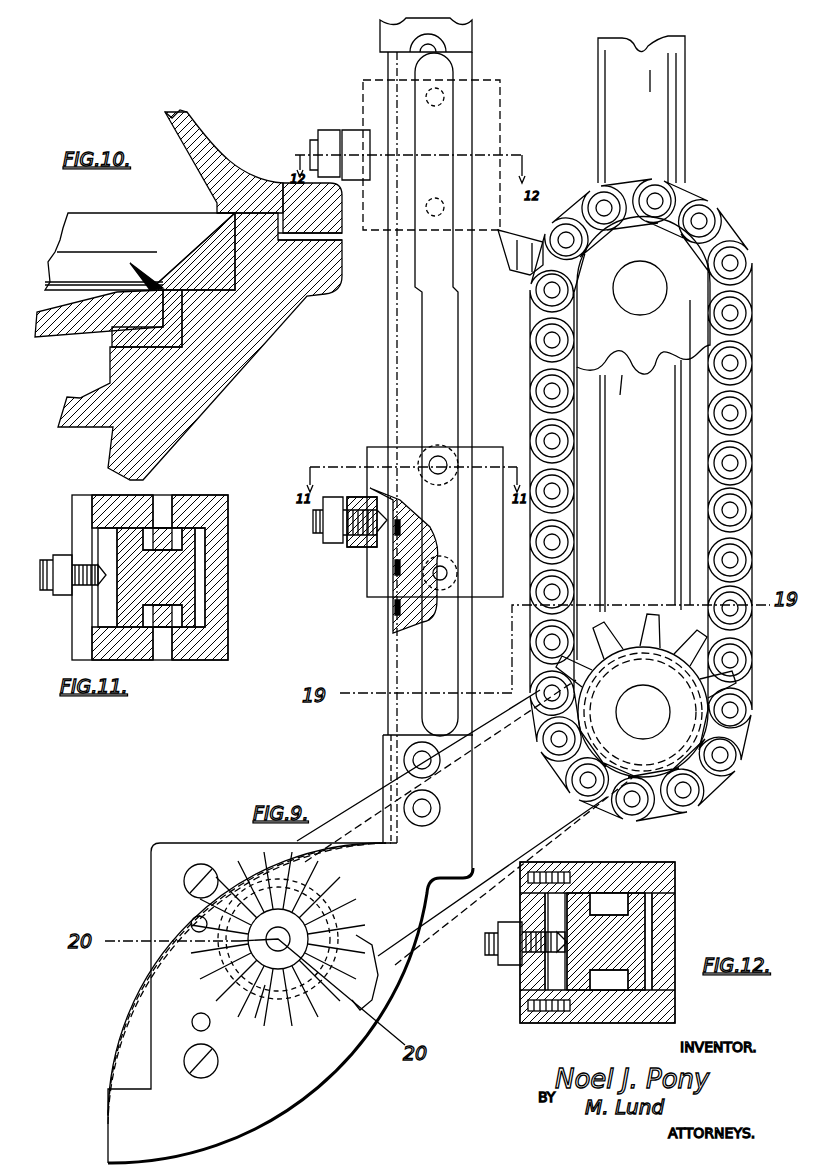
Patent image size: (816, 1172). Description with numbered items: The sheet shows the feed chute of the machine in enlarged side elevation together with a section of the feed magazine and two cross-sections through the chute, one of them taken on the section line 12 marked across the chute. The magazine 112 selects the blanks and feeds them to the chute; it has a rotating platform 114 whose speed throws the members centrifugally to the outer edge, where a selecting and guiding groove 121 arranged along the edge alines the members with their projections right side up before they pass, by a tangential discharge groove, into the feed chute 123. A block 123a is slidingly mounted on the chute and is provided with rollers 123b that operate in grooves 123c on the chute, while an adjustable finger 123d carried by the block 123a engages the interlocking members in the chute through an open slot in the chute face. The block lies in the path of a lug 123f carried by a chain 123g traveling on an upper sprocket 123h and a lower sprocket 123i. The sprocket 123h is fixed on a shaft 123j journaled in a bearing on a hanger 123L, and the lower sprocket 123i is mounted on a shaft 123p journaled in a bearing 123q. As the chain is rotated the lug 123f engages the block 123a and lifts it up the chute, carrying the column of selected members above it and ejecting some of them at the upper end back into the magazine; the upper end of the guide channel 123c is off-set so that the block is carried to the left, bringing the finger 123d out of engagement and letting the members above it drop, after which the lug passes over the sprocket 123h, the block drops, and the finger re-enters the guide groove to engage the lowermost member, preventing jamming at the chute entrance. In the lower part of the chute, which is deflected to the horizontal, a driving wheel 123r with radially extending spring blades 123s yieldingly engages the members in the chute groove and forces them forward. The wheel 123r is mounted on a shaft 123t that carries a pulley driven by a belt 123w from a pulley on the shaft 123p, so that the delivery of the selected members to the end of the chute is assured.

In FIG. 10, the section line 12 is at (310, 205).
In FIG. 10, the magazine 112 is at (180, 165).
In FIG. 10, the rotating platform 114 is at (97, 300).
In FIG. 10, the selecting and guiding groove 121 is at (133, 273).
In FIG. 11, the feed chute 123 is at (110, 580).
In FIG. 12, the feed chute 123 is at (545, 955).
In FIG. 9, the feed chute 123 is at (386, 350).
In FIG. 11, the block 123a is at (225, 645).
In FIG. 12, the block 123a is at (573, 1018).
In FIG. 9, the block 123a is at (380, 453).
In FIG. 11, the rollers 123b is at (185, 535).
In FIG. 11, the grooves 123c is at (200, 545).
In FIG. 12, the grooves 123c is at (607, 905).
In FIG. 9, the grooves 123c is at (425, 640).
In FIG. 12, the adjustable finger 123d is at (560, 938).
In FIG. 9, the adjustable finger 123d is at (360, 548).
In FIG. 9, the lug 123f is at (545, 204).
In FIG. 9, the chain 123g is at (540, 395).
In FIG. 9, the bearing 123q is at (605, 430).
In FIG. 9, the sprocket 123h is at (628, 388).
In FIG. 9, the lower sprocket 123i is at (695, 735).
In FIG. 9, the shaft 123j is at (641, 312).
In FIG. 9, the hanger 123L is at (606, 125).
In FIG. 9, the shaft 123p is at (638, 728).
In FIG. 9, the driving wheel 123r is at (215, 968).
In FIG. 9, the spring blades 123s is at (258, 1025).
In FIG. 9, the shaft 123t is at (322, 866).
In FIG. 9, the belt 123w is at (577, 830).